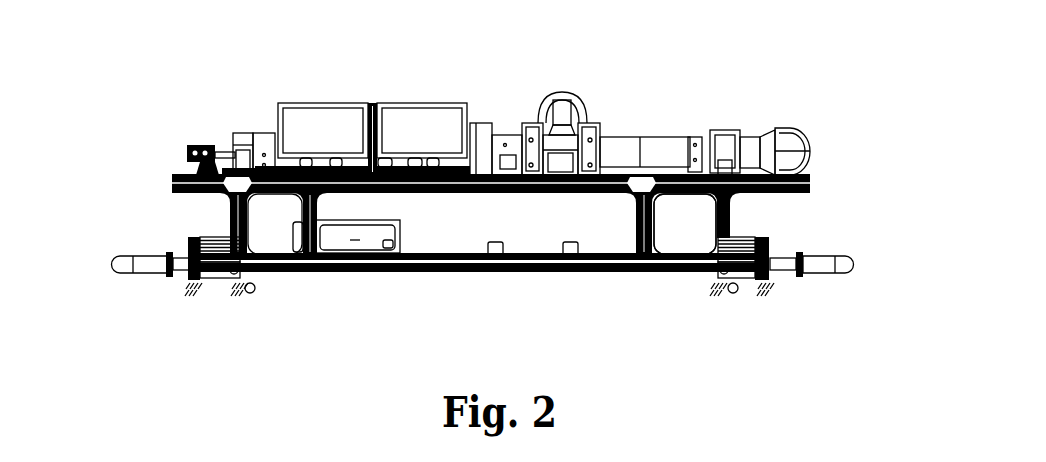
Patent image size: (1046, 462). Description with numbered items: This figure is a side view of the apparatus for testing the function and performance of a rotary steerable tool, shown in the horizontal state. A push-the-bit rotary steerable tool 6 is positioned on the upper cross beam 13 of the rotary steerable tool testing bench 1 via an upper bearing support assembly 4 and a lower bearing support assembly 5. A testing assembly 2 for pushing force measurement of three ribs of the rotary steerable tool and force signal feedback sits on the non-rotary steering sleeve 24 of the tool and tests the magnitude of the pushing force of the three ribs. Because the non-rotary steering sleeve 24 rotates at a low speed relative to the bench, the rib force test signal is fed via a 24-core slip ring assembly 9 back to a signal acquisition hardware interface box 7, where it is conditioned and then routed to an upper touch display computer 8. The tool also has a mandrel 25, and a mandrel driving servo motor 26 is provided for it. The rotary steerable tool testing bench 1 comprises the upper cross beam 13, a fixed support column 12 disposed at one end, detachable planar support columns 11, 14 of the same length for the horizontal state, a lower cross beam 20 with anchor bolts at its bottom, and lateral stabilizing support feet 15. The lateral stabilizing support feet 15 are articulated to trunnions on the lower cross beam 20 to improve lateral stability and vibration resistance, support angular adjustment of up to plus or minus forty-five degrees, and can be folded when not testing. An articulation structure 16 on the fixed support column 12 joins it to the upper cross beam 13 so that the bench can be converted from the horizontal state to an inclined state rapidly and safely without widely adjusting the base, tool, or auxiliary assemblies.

The rotary steerable tool testing bench 1 is at (176, 128).
The testing assembly for pushing force measurement of three ribs of the rotary steer 2 is at (563, 100).
The upper bearing support assembly 4 is at (243, 145).
The lower bearing support assembly 5 is at (725, 140).
The push-the-bit rotary steerable tool 6 is at (640, 142).
The signal acquisition hardware interface box 7 is at (370, 243).
The upper touch display computer 8 is at (312, 130).
The 24-core slip ring assembly 9 is at (480, 130).
The planar support column 11 is at (285, 266).
The fixed support column 12 is at (722, 213).
The upper cross beam 13 is at (412, 182).
The planar support column 14 is at (312, 218).
The lateral stabilizing support foot 15 is at (763, 285).
The articulation structure 16 is at (722, 202).
The lower cross beam 20 is at (472, 265).
The non-rotary steering sleeve of rotary steerable tool 24 is at (513, 140).
The mandrel 25 is at (262, 140).
The mandrel driving servo motor 26 is at (187, 153).